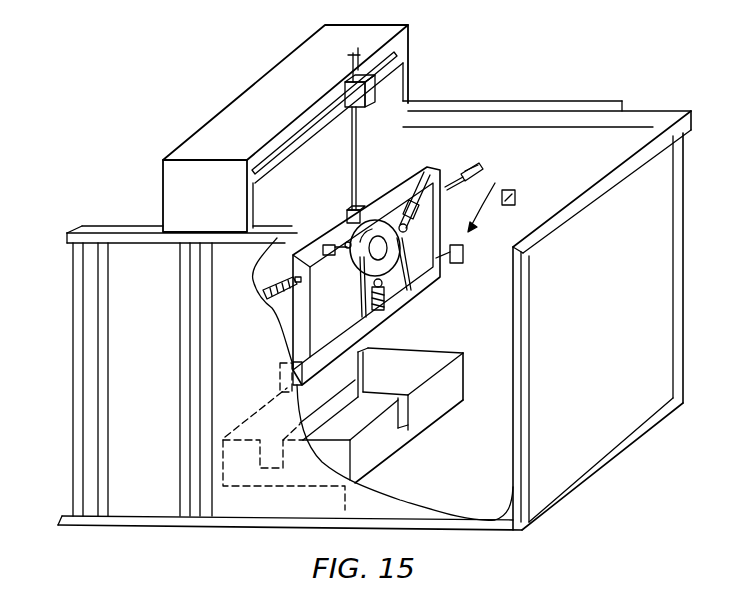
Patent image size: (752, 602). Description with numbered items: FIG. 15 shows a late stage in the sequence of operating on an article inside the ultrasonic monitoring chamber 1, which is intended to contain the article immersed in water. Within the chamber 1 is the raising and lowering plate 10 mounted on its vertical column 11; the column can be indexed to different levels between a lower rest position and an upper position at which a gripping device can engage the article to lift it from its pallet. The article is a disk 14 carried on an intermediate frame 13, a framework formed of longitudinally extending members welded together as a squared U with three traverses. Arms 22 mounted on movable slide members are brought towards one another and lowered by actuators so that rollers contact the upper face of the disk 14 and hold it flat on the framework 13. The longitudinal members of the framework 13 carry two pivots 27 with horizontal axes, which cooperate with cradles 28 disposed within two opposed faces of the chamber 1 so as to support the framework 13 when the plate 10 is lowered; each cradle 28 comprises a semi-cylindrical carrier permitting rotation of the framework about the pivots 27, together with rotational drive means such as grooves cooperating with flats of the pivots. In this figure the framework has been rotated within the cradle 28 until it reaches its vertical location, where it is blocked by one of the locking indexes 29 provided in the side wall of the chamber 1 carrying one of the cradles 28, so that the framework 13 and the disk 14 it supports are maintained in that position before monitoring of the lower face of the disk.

The ultrasonic monitoring chamber 1 is at (609, 337).
The raising and lowering plate 10 is at (450, 380).
The vertical column 11 is at (392, 468).
The intermediate frame 13 is at (387, 316).
The disk 14 is at (387, 213).
The arms 22 is at (418, 280).
The pivots 27 is at (258, 305).
The cradles 28 is at (458, 172).
The locking indexes 29 is at (515, 190).